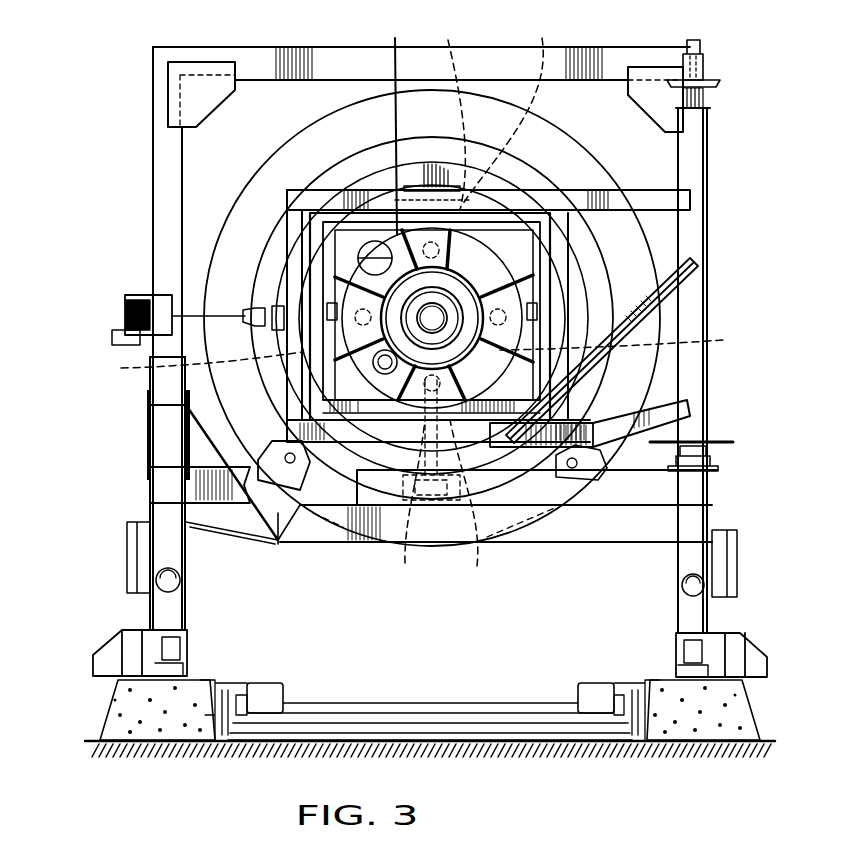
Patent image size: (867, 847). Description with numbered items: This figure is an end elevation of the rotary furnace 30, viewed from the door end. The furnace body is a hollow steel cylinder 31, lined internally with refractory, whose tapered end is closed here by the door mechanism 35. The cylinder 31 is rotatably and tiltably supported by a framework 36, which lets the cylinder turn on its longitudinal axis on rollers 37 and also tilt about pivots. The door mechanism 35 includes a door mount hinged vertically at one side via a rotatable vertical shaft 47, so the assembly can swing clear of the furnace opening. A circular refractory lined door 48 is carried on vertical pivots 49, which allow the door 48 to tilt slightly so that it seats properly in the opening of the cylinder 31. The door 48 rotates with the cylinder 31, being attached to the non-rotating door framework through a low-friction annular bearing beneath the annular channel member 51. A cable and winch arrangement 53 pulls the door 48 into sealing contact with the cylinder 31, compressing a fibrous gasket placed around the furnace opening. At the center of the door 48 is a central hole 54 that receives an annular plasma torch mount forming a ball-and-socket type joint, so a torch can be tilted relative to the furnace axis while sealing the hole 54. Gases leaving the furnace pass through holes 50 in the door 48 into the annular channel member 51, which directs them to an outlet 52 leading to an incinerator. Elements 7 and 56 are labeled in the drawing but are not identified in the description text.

The tilt bracket 7 is at (563, 472).
The rotary furnace 30 is at (150, 186).
The hollow steel cylinder 31 is at (580, 147).
The door mechanism 35 is at (273, 258).
The framework 36 is at (708, 151).
The rollers 37 is at (303, 527).
The rotatable vertical shaft 47 is at (695, 312).
The refractory lined door 48 is at (445, 312).
The vertical pivots 49 is at (451, 297).
The holes 50 is at (421, 297).
The annular channel member 51 is at (392, 120).
The outlet 52 is at (383, 374).
The cable and winch arrangement 53 is at (140, 298).
The central hole 54 is at (495, 268).
The cross beam 56 is at (626, 196).